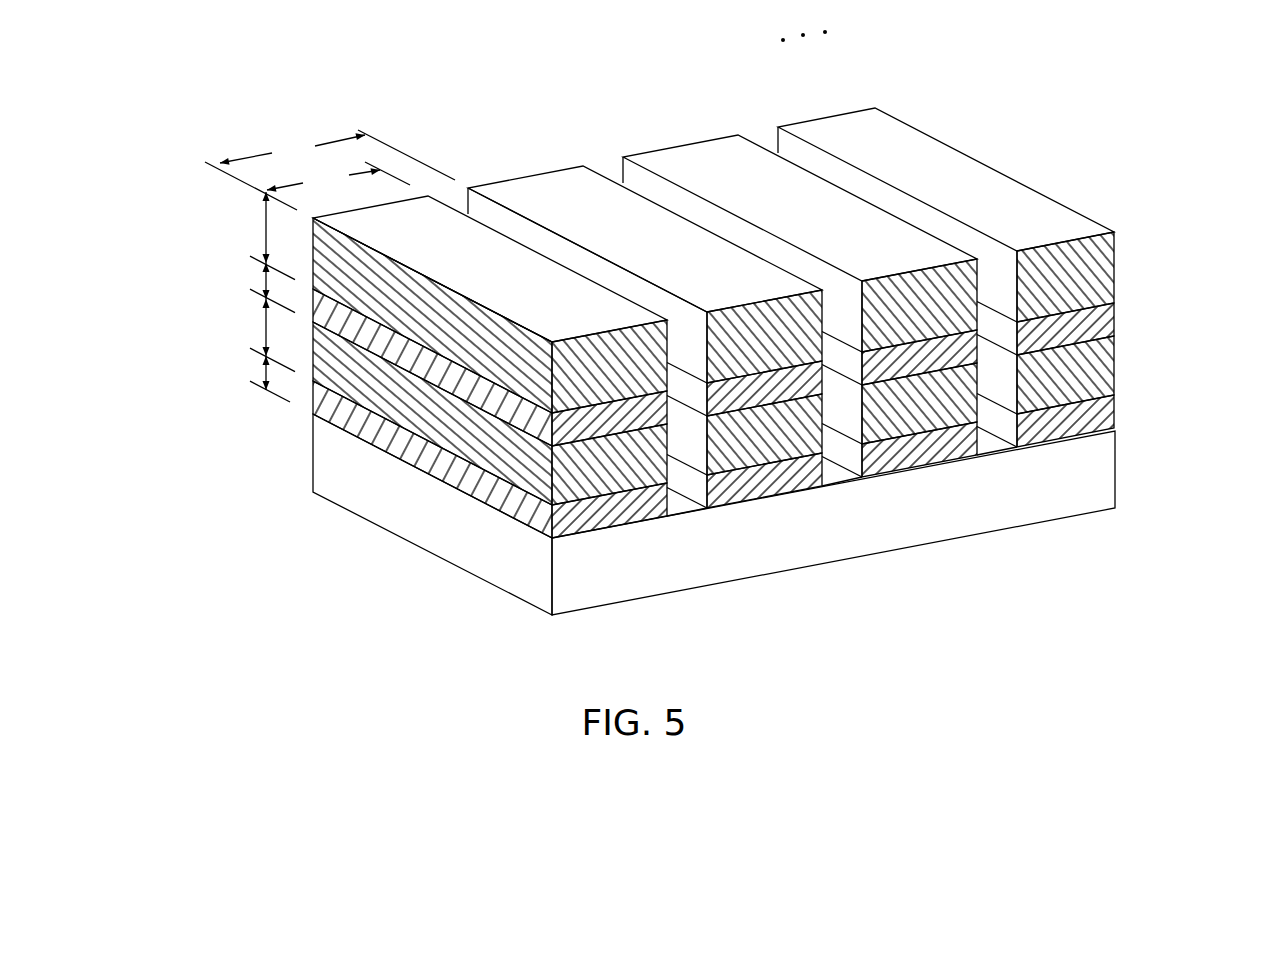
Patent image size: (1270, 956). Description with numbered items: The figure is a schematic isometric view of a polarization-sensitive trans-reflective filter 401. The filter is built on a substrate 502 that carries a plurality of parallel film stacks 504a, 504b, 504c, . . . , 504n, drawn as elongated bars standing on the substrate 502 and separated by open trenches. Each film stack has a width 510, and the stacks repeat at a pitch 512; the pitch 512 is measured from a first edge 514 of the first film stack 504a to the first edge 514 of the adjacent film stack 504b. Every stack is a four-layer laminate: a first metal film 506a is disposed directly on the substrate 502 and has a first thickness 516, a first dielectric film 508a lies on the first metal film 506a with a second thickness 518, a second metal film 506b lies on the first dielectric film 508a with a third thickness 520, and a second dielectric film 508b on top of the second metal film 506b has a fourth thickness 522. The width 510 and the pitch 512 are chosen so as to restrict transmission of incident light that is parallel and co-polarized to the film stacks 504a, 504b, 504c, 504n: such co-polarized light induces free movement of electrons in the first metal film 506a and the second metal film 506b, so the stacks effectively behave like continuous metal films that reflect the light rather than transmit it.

The trans-reflective filter 401 is at (778, 311).
The substrate 502 is at (1103, 467).
The first film stack 504a is at (430, 210).
The adjacent film stack 504b is at (583, 180).
The film stack 504c is at (738, 147).
The film stack 504n is at (877, 123).
The first metal film 506a is at (1105, 417).
The second metal film 506b is at (1105, 325).
The first dielectric film 508a is at (1105, 370).
The second dielectric film 508b is at (1105, 272).
The width 510 is at (338, 177).
The pitch 512 is at (330, 170).
The first edge 514 is at (446, 278).
The first thickness 516 is at (262, 372).
The second thickness 518 is at (262, 326).
The third thickness 520 is at (262, 280).
The fourth thickness 522 is at (262, 227).